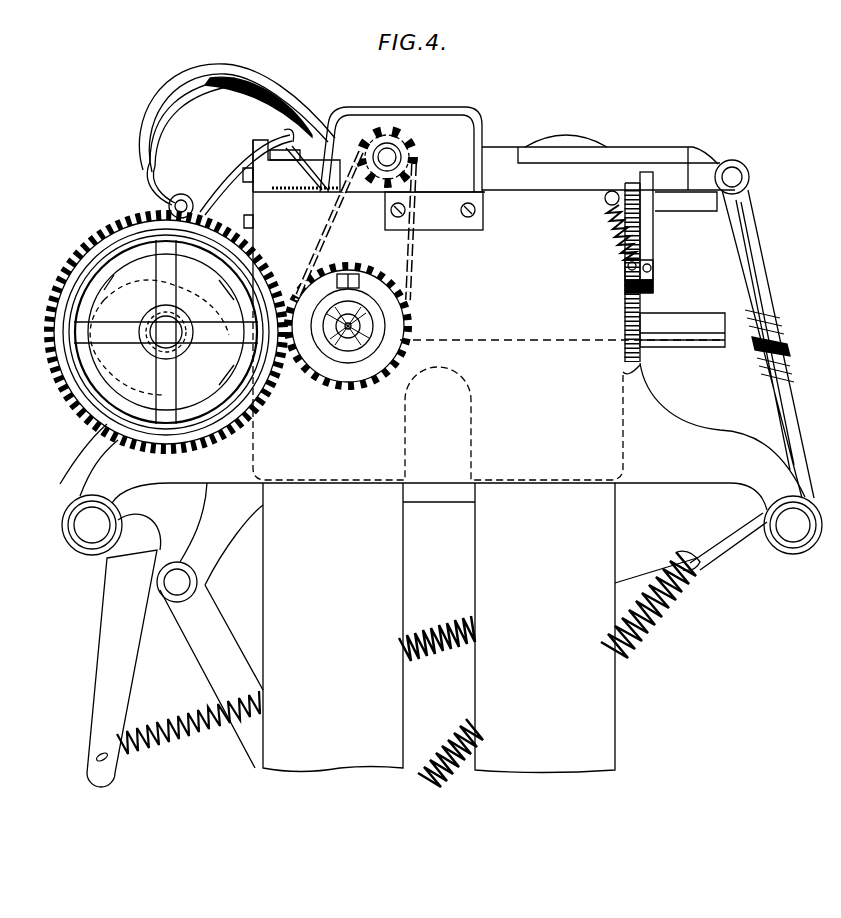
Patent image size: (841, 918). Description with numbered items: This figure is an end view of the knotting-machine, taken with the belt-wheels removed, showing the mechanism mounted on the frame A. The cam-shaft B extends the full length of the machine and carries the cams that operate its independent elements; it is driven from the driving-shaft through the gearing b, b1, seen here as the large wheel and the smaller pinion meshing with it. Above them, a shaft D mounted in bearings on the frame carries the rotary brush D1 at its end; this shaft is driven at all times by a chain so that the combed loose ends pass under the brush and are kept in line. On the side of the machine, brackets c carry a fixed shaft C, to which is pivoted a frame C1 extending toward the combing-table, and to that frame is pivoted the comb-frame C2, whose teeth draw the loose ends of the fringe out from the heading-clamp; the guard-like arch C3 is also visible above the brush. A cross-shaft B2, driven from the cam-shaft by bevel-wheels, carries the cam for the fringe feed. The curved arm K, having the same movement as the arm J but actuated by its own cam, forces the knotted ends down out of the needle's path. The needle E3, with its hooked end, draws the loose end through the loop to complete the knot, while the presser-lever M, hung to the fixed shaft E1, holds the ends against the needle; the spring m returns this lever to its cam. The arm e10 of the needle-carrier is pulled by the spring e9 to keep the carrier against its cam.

The frame A is at (439, 456).
The cam-shaft B is at (166, 332).
The gearing b1 is at (83, 353).
The gearing b is at (348, 326).
The shaft D is at (355, 215).
The rotary brush D1 is at (413, 136).
The guard frame C3 is at (401, 140).
The comb-frame C2 is at (615, 173).
The frame C1 is at (768, 344).
The fixed shaft C is at (714, 430).
The brackets c is at (793, 525).
The cross-shaft B2 is at (665, 267).
The arm K is at (237, 137).
The arm J is at (192, 141).
The needle E3 is at (264, 165).
The fixed shaft E1 is at (92, 497).
The presser-lever M is at (124, 650).
The arm of the needle-carrier e10 is at (190, 625).
The spring m is at (441, 699).
The spring e9 is at (684, 585).